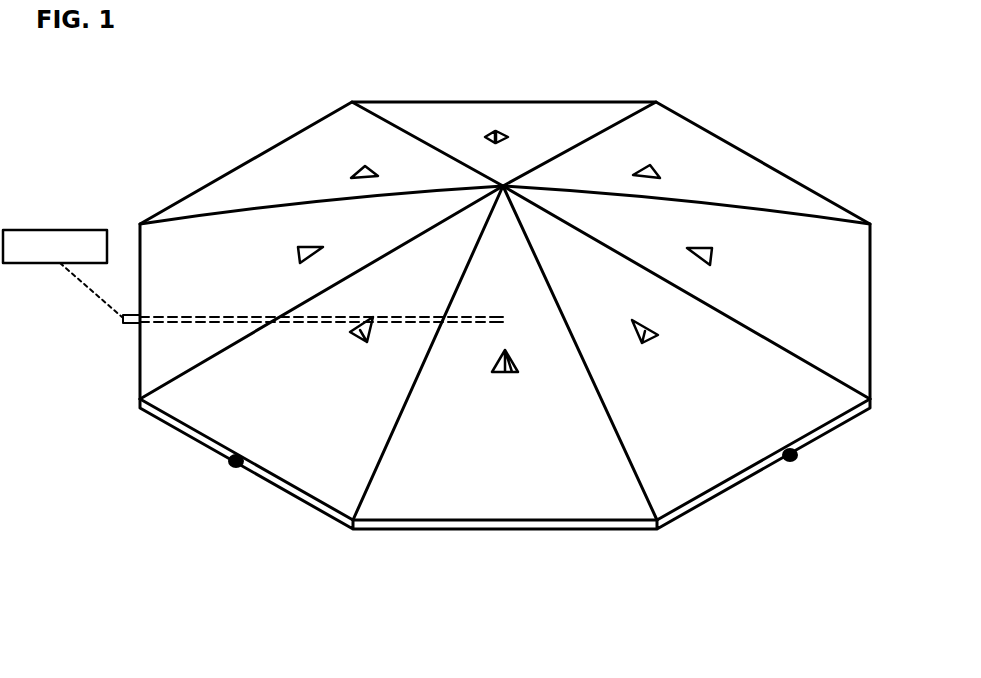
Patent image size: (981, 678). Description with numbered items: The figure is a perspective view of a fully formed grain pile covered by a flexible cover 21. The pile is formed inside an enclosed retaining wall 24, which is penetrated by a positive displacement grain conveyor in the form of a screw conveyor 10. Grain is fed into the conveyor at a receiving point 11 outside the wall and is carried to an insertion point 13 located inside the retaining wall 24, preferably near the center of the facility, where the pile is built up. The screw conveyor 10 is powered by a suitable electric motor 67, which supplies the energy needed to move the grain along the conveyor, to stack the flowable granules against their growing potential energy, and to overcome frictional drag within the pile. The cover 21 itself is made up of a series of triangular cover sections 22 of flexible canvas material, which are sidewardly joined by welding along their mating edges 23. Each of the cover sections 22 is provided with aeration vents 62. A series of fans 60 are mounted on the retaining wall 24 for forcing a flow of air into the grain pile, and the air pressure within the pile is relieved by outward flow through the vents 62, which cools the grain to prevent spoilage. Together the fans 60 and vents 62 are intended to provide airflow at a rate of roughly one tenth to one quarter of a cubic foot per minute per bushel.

The screw conveyor 10 is at (222, 313).
The receiving point 11 is at (125, 326).
The insertion point 13 is at (505, 318).
The flexible cover 21 is at (777, 153).
The cover sections 22 is at (455, 483).
The mating edges 23 is at (370, 472).
The retaining wall 24 is at (513, 528).
The fans 60 is at (232, 470).
The aeration vents 62 is at (507, 125).
The electric motor 67 is at (62, 227).